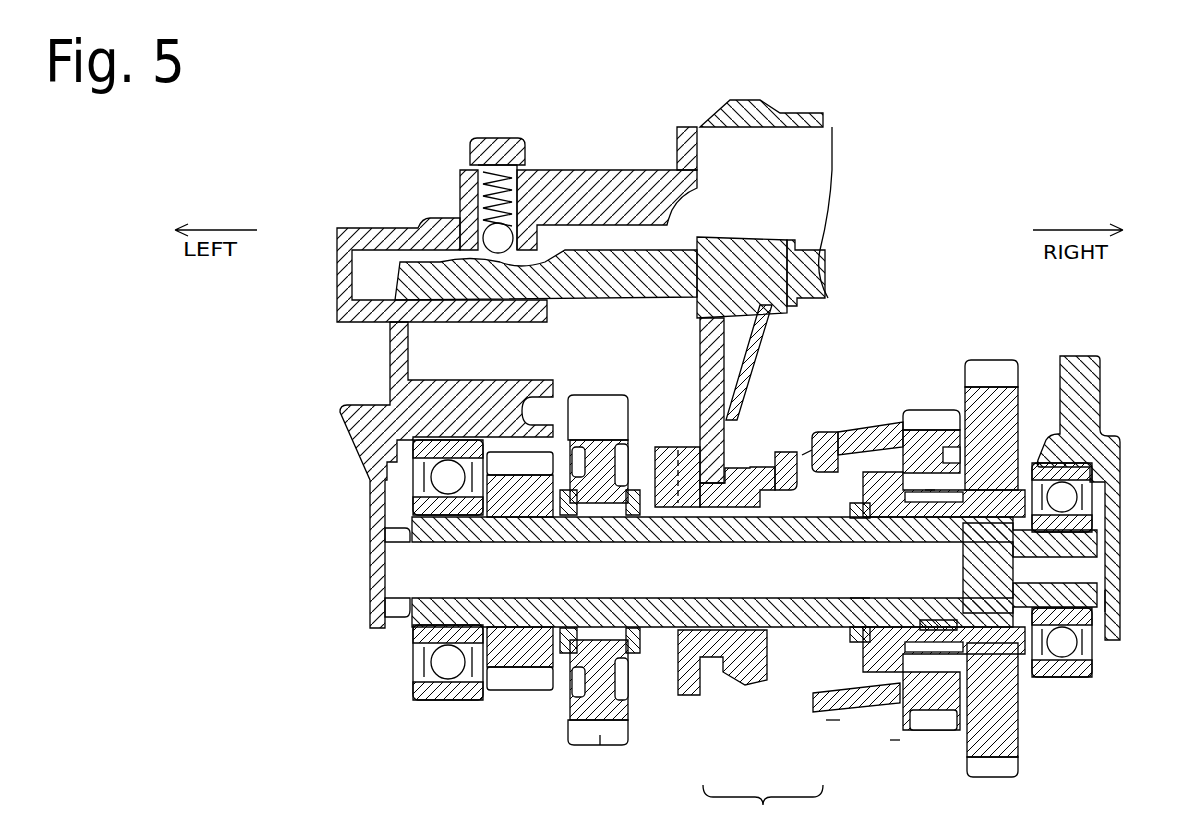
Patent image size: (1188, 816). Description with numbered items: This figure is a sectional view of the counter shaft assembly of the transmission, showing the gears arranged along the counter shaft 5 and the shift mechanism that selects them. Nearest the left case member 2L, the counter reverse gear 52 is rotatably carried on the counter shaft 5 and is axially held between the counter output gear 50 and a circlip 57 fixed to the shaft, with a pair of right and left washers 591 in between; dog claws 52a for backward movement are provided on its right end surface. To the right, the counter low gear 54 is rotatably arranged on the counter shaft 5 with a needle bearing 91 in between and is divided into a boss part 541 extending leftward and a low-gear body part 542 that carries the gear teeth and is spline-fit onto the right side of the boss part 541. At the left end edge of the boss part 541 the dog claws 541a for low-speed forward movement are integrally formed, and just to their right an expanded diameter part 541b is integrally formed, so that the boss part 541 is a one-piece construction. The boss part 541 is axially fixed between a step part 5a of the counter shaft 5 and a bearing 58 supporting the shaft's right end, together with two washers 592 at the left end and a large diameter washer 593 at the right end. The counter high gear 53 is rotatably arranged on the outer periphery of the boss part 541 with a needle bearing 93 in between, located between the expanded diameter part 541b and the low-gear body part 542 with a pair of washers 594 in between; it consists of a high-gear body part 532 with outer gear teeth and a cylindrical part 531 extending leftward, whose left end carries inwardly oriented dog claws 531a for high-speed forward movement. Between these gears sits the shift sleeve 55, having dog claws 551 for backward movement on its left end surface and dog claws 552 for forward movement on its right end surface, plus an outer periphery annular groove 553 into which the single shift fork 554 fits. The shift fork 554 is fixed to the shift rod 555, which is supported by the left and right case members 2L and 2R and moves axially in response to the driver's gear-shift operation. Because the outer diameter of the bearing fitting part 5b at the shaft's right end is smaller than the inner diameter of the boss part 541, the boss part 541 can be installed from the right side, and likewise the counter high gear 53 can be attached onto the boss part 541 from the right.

The left case member 2L is at (700, 132).
The right case member 2R is at (832, 125).
The counter shaft 5 is at (395, 528).
The step part 5a is at (856, 607).
The bearing fitting part 5b is at (1113, 602).
The counter output gear 50 is at (523, 693).
The counter reverse gear 52 is at (600, 745).
The dog claws 52a is at (648, 465).
The counter high gear 53 is at (833, 725).
The counter low gear 54 is at (895, 745).
The shift sleeve 55 is at (738, 440).
The circlip 57 is at (577, 600).
The bearing 58 is at (1083, 680).
The needle bearing 91 is at (920, 542).
The needle bearing 93 is at (930, 490).
The cylindrical part 531 is at (862, 440).
The dog claws 531a is at (802, 455).
The high-gear body part 532 is at (920, 407).
The boss part 541 is at (1013, 677).
The dog claws 541a is at (862, 488).
The expanded diameter part 541b is at (887, 657).
The low-gear body part 542 is at (1020, 743).
The dog claws 551 is at (690, 440).
The dog claws 552 is at (778, 452).
The outer periphery annular groove 553 is at (715, 660).
The shift fork 554 is at (700, 415).
The shift rod 555 is at (620, 258).
The washers 591 is at (567, 490).
The washers 592 is at (852, 512).
The large diameter washer 593 is at (1025, 470).
The washer 594 is at (960, 615).